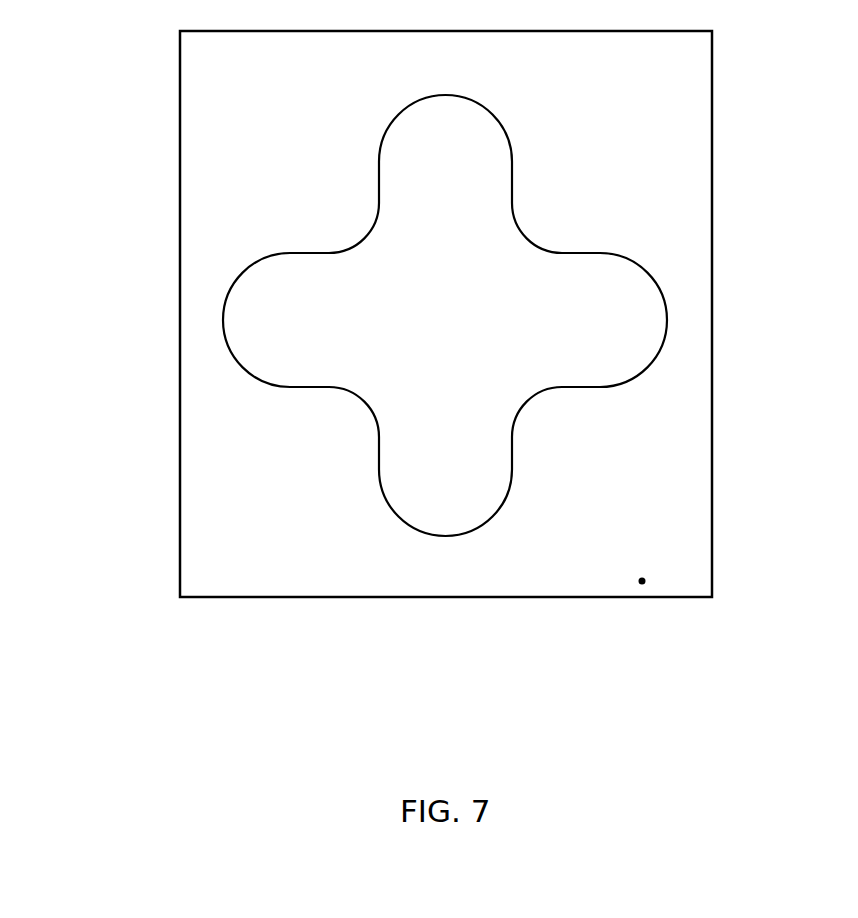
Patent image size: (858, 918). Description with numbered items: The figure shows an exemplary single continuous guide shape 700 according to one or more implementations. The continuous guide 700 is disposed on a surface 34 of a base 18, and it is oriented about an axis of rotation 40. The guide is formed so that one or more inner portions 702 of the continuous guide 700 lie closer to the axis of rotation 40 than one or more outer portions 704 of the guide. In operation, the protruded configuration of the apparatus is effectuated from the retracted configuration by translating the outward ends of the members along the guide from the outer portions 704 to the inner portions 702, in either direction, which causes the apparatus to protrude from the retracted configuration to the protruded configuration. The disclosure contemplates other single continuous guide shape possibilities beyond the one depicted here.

The base 18 is at (713, 565).
The surface 34 is at (643, 586).
The axis of rotation 40 is at (437, 310).
The single continuous guide shape 700 is at (252, 208).
The inner portions 702 is at (358, 233).
The outer portions 704 is at (445, 95).